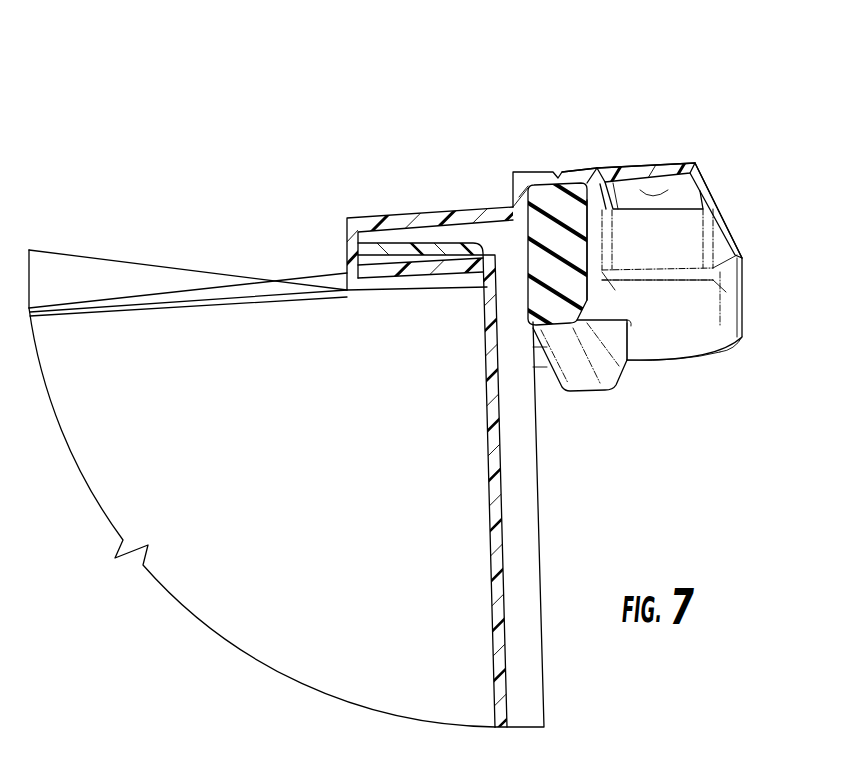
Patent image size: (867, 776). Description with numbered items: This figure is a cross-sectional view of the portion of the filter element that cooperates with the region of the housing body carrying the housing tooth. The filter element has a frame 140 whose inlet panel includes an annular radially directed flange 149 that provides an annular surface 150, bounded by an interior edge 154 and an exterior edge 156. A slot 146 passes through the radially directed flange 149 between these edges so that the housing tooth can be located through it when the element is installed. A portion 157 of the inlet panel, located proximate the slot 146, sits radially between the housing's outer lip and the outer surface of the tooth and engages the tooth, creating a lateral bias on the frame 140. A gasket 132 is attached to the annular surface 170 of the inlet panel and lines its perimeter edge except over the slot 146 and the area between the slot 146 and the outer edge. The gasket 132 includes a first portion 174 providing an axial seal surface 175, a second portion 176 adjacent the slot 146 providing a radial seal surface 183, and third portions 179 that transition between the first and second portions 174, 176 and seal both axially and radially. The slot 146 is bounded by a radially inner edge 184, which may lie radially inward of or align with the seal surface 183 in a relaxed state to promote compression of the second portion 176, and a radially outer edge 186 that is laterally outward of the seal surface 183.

The gasket 132 is at (545, 232).
The frame 140 is at (400, 222).
The slot 146 is at (577, 164).
The radially directed flange 149 is at (675, 180).
The annular surface 150 is at (642, 178).
The interior edge 154 is at (513, 175).
The exterior edge 156 is at (698, 166).
The portion of the inlet panel 157 is at (638, 164).
The annular surface of the inlet panel 170 is at (686, 192).
The first portion of the gasket 174 is at (737, 355).
The axial seal surface 175 is at (680, 310).
The second portion of the gasket 176 is at (519, 311).
The third portion of the gasket 179 is at (637, 370).
The radial seal surface 183 is at (594, 278).
The radially inner edge of the slot 184 is at (572, 178).
The radially outer edge of the slot 186 is at (597, 186).